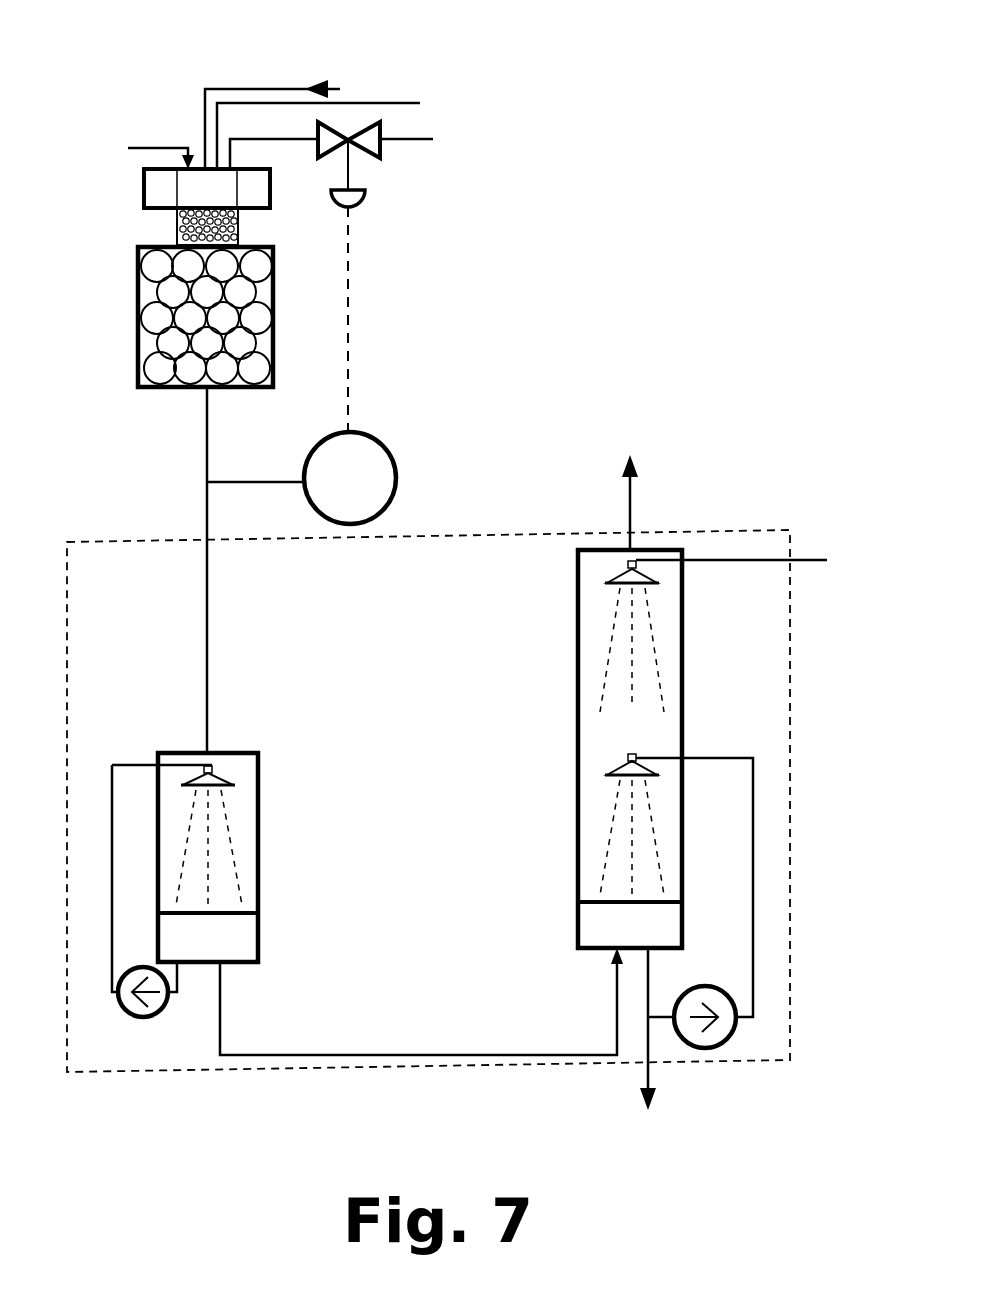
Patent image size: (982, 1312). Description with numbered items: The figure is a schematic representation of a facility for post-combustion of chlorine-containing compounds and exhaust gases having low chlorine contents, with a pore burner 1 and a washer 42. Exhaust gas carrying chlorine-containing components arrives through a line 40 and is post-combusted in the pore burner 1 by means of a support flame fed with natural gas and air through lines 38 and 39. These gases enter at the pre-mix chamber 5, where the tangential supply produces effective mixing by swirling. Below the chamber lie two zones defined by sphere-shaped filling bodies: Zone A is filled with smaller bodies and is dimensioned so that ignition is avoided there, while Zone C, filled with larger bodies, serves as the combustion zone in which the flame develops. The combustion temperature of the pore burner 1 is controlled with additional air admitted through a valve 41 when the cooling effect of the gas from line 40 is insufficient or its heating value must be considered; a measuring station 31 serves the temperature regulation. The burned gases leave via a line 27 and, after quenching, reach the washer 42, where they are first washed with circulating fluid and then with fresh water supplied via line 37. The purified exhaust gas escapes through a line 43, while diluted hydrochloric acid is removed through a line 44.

The pore burner 1 is at (118, 307).
The pre-mix chamber 5 is at (150, 190).
The Zone A is at (238, 228).
The Zone C is at (256, 312).
The discharge line 27 is at (204, 474).
The measuring station 31 is at (358, 455).
The line 37 is at (805, 560).
The line 38 is at (150, 148).
The line 39 is at (400, 101).
The line 40 is at (333, 82).
The valve 41 is at (370, 148).
The washer 42 is at (118, 572).
The line 43 is at (633, 503).
The line 44 is at (650, 1073).